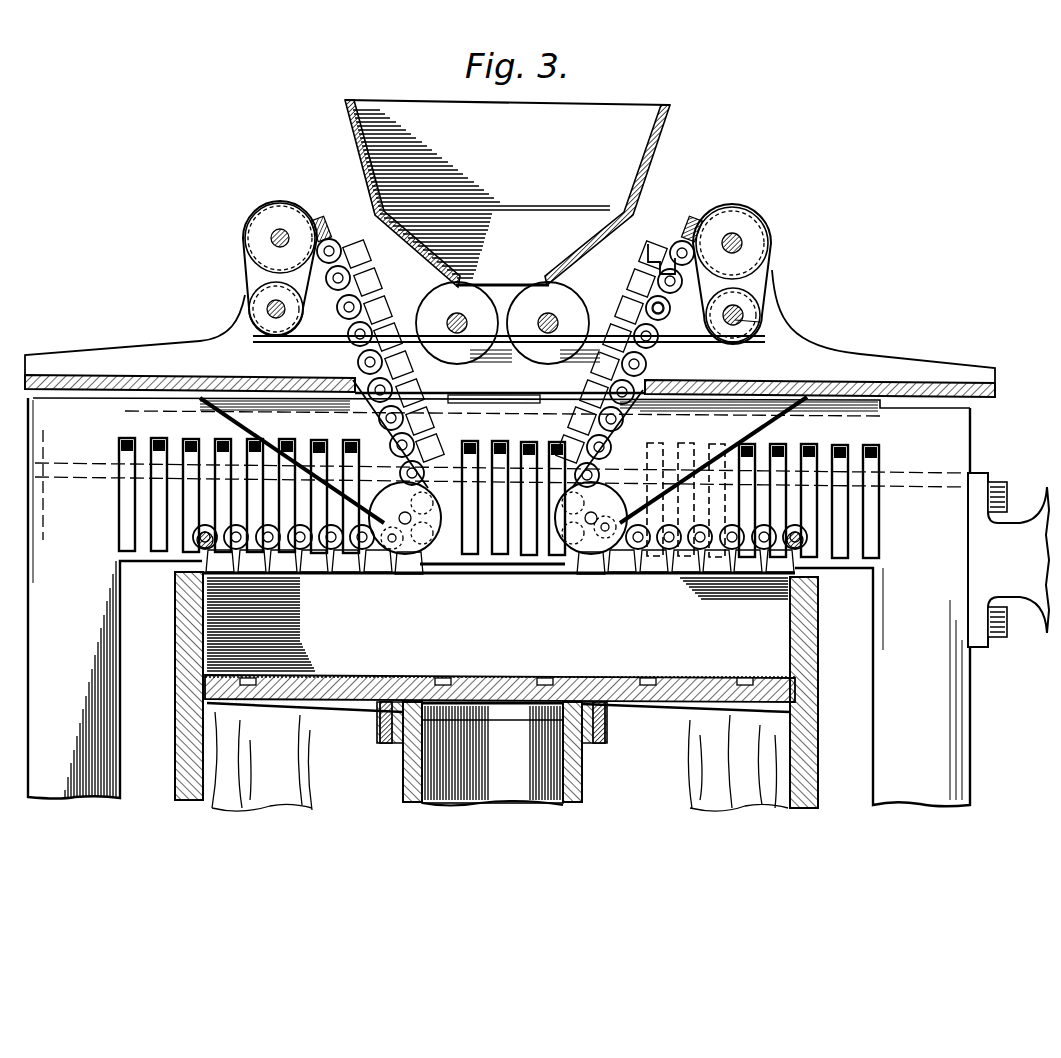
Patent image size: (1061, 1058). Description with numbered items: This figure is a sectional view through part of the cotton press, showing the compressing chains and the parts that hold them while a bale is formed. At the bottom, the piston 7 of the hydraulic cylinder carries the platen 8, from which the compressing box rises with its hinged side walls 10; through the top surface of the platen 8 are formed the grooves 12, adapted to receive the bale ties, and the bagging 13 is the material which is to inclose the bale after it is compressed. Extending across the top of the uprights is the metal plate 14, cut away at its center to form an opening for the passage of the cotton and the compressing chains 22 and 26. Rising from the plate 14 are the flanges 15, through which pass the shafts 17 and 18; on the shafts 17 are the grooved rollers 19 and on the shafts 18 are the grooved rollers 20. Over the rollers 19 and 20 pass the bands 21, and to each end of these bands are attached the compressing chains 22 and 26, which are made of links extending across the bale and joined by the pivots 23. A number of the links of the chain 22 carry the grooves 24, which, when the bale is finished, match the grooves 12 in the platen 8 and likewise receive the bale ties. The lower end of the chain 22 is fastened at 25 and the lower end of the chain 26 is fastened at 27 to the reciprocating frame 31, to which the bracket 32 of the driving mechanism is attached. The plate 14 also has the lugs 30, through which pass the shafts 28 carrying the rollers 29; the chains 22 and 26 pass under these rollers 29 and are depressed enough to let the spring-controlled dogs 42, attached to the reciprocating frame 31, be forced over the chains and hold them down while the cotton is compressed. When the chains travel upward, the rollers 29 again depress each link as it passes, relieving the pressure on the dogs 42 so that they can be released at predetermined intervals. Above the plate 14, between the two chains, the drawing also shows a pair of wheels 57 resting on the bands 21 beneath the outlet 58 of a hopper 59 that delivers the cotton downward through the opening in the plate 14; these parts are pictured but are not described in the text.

The piston 7 is at (492, 754).
The platen 8 is at (672, 706).
The hinged side walls 10 is at (178, 690).
The grooves 12 is at (738, 680).
The bagging 13 is at (215, 806).
The metal plate 14 is at (872, 386).
The flanges 15 is at (745, 306).
The shafts 17 is at (762, 322).
The shafts 18 is at (742, 246).
The grooved rollers 19 is at (752, 313).
The grooved rollers 20 is at (750, 226).
The bands 21 is at (773, 282).
The compressing chain 22 is at (681, 395).
The pivots 23 is at (666, 306).
The grooves 24 is at (648, 246).
The fastening point of chain 22 25 is at (818, 560).
The compressing chain 26 is at (374, 292).
The fastening point of chain 26 27 is at (178, 562).
The shafts 28 is at (498, 518).
The rollers 29 is at (405, 552).
The lugs 30 is at (510, 417).
The reciprocating frame 31 is at (110, 672).
The bracket 32 is at (1008, 560).
The dogs 42 is at (500, 552).
The feed roller 57 is at (457, 323).
The hopper outlet 58 is at (503, 290).
The hopper 59 is at (507, 193).